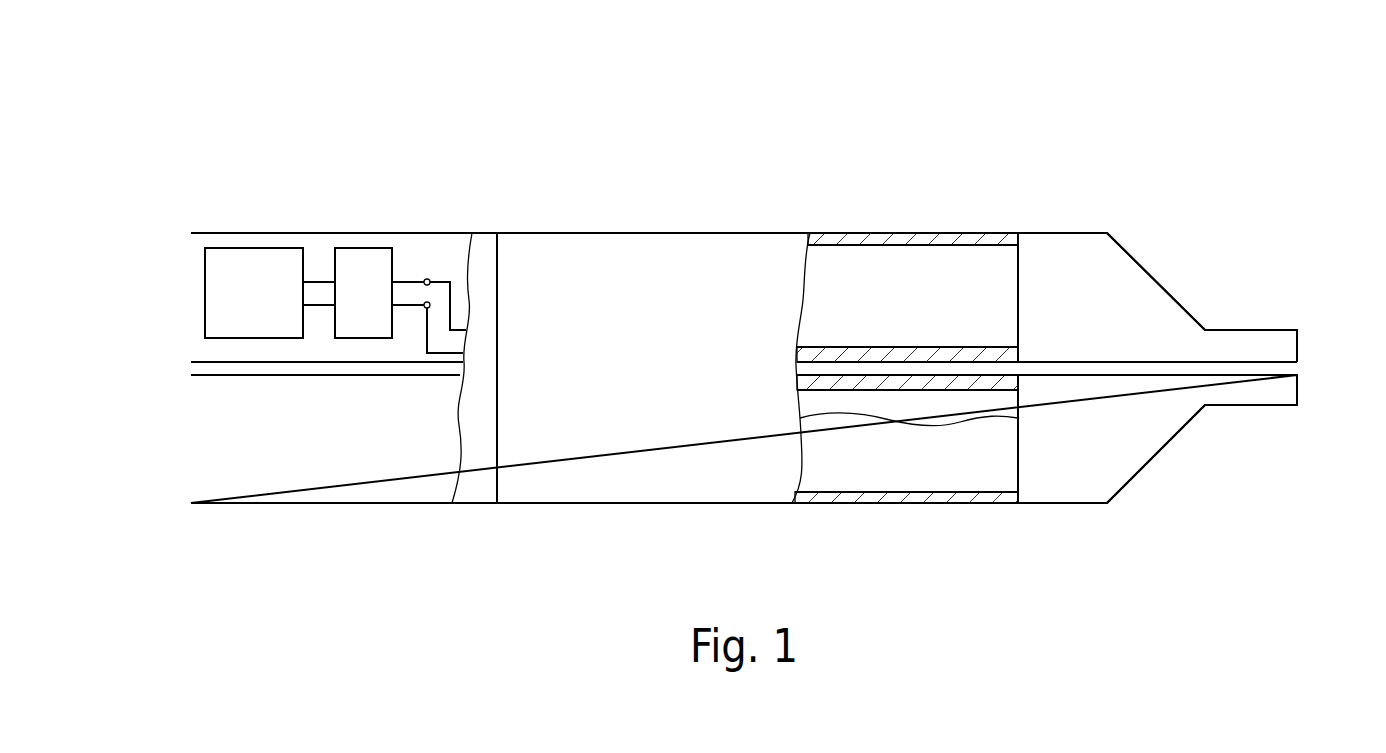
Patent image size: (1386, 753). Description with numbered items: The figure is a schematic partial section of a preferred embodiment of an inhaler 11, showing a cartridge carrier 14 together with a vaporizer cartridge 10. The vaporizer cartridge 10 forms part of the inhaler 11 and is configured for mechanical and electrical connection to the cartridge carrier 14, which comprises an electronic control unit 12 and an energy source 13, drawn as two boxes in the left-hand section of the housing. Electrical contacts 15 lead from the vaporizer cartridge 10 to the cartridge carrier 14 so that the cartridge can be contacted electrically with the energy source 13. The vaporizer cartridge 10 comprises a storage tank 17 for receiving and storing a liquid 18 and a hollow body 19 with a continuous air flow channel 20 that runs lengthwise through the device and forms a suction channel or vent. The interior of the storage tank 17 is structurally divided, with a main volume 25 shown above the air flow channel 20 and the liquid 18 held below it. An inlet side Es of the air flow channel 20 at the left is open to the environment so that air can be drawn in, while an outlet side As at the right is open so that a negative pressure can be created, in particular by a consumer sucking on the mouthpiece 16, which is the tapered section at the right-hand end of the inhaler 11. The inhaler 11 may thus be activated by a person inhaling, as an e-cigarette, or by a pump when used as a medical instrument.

The vaporizer cartridge 10 is at (735, 228).
The inhaler 11 is at (1010, 118).
The electronic control unit 12 is at (365, 262).
The energy source 13 is at (247, 262).
The cartridge carrier 14 is at (398, 508).
The electrical contacts 15 is at (410, 282).
The mouthpiece 16 is at (1138, 262).
The storage tank 17 is at (903, 232).
The liquid 18 is at (973, 453).
The hollow body 19 is at (937, 338).
The air flow channel 20 is at (900, 372).
The main volume 25 is at (848, 296).
The inlet side Es is at (190, 372).
The outlet side As is at (1297, 368).